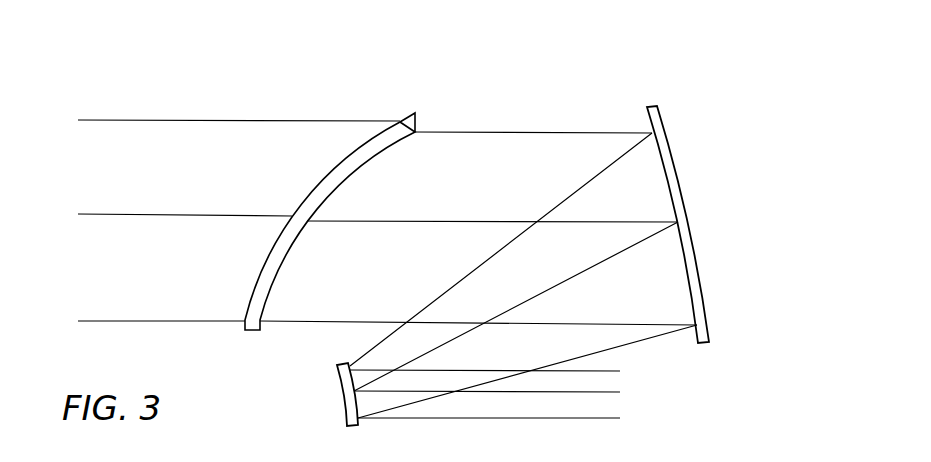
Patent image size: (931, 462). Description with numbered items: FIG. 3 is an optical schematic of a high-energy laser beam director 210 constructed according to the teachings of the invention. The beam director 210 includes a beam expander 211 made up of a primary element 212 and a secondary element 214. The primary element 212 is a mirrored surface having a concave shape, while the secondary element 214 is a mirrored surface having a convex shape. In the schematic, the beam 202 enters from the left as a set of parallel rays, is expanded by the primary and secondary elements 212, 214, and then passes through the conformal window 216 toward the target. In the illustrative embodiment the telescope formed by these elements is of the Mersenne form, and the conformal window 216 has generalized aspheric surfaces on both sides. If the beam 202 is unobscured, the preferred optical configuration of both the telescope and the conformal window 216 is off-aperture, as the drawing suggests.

The beam 202 is at (155, 120).
The beam director 210 is at (288, 100).
The beam expander 211 is at (690, 102).
The primary element 212 is at (342, 396).
The secondary element 214 is at (683, 182).
The conformal window 216 is at (250, 331).